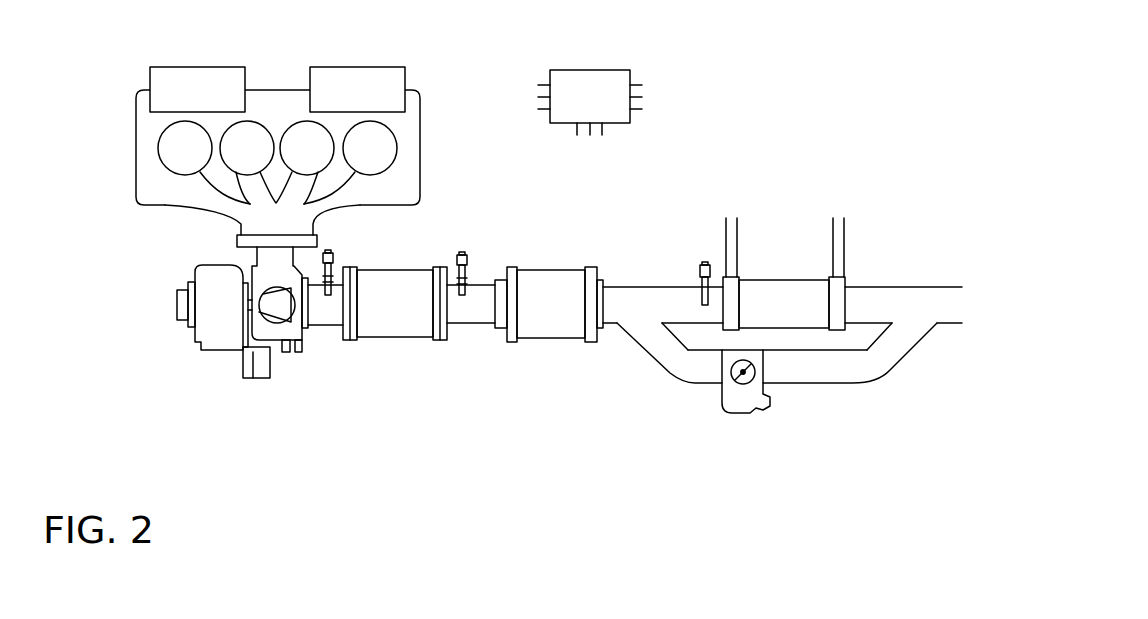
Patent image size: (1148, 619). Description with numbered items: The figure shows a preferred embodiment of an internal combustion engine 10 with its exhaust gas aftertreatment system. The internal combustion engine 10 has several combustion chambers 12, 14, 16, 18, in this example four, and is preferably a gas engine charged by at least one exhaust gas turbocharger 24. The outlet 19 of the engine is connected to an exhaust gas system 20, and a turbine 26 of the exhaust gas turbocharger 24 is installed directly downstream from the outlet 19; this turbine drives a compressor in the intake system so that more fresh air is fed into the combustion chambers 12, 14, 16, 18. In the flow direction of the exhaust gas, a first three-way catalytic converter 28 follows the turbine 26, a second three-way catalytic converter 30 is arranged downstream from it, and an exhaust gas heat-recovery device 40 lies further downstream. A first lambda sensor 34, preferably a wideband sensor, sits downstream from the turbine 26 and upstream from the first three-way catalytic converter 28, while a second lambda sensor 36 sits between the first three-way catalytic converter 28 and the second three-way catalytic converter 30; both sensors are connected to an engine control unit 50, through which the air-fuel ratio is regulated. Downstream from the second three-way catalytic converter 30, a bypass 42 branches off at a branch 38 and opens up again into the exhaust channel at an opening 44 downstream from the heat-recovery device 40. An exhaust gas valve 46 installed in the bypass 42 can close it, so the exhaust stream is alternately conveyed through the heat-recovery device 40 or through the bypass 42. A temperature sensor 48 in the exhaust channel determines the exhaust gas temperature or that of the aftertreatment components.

The internal combustion engine 10 is at (137, 127).
The combustion chamber 12 is at (175, 155).
The combustion chamber 14 is at (253, 135).
The combustion chamber 16 is at (303, 135).
The combustion chamber 18 is at (383, 147).
The outlet 19 is at (265, 223).
The exhaust gas system 20 is at (852, 142).
The exhaust gas turbocharger 24 is at (227, 355).
The turbine 26 is at (273, 335).
The first three-way catalytic converter 28 is at (407, 280).
The second three-way catalytic converter 30 is at (542, 270).
The first lambda sensor 34 is at (333, 270).
The second lambda sensor 36 is at (465, 268).
The branch 38 is at (643, 323).
The exhaust gas heat-recovery device 40 is at (787, 280).
The bypass 42 is at (837, 373).
The opening 44 is at (913, 322).
The exhaust gas valve 46 is at (737, 400).
The temperature sensor 48 is at (700, 278).
The engine control unit 50 is at (615, 72).